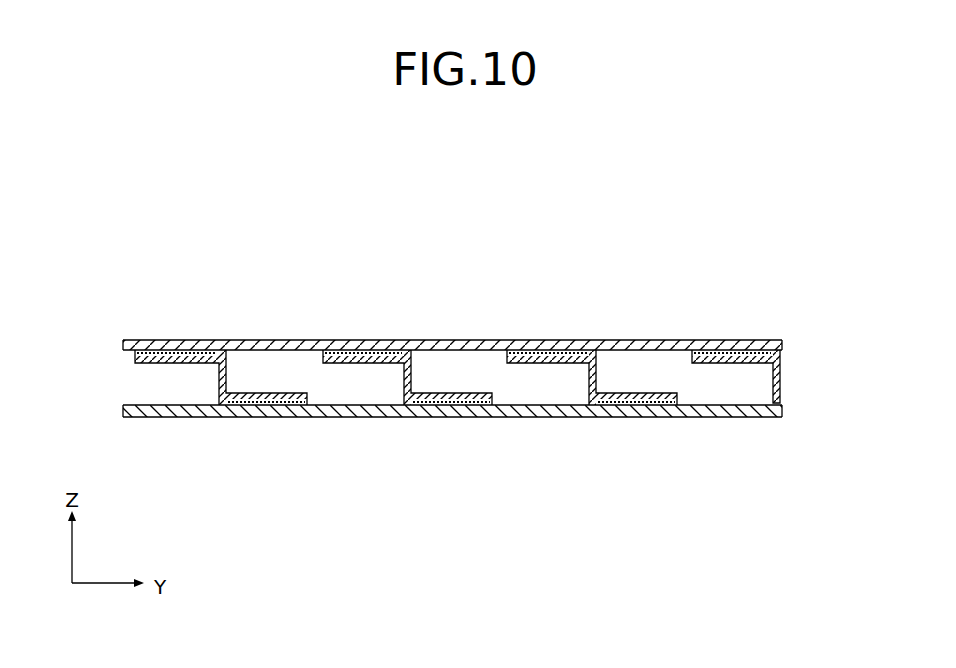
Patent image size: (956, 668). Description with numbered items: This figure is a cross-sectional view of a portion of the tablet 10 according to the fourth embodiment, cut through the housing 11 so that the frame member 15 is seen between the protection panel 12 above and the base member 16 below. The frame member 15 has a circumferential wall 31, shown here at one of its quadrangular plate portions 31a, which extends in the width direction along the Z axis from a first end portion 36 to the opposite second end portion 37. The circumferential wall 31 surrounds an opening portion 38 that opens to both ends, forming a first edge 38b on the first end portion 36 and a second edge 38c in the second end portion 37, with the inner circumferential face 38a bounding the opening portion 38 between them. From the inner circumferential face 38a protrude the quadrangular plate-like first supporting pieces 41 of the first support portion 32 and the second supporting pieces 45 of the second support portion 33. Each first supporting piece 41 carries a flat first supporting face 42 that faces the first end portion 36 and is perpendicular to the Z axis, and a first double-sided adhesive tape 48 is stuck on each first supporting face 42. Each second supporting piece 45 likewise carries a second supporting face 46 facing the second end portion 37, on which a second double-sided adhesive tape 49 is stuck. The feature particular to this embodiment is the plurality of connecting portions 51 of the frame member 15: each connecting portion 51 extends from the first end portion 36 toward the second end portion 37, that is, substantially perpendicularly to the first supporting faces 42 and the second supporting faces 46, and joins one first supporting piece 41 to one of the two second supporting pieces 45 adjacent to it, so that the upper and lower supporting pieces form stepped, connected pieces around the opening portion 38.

The tablet 10 is at (242, 285).
The housing 11 is at (223, 489).
The protection panel 12 is at (284, 340).
The frame member 15 is at (143, 388).
The base member 16 is at (203, 405).
The circumferential wall 31 is at (333, 387).
The plate portion 31a is at (370, 380).
The first support portion 32 is at (398, 250).
The second support portion 33 is at (487, 467).
The first end portion 36 is at (735, 340).
The second end portion 37 is at (748, 417).
The opening portion 38 is at (616, 366).
The inner circumferential face 38a is at (657, 370).
The first edge 38b is at (697, 340).
The second edge 38c is at (722, 417).
The first supporting piece 41 is at (155, 340).
The first supporting face 42 is at (175, 340).
The second supporting piece 45 is at (231, 400).
The second supporting face 46 is at (257, 406).
The first double-sided adhesive tape 48 is at (135, 340).
The second double-sided adhesive tape 49 is at (450, 402).
The connecting portion 51 is at (233, 340).